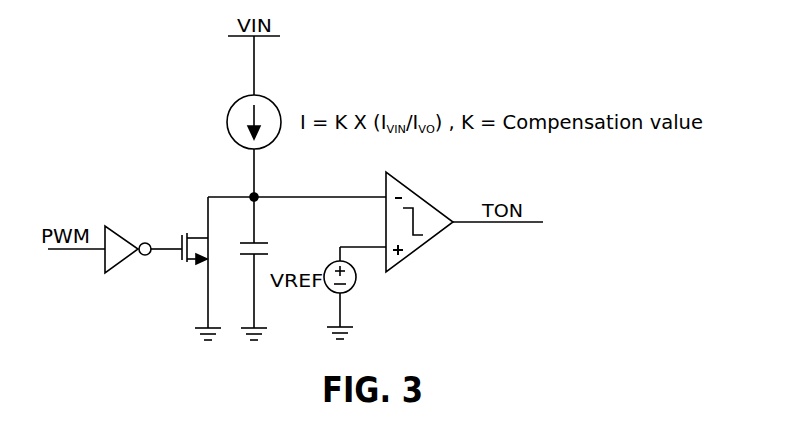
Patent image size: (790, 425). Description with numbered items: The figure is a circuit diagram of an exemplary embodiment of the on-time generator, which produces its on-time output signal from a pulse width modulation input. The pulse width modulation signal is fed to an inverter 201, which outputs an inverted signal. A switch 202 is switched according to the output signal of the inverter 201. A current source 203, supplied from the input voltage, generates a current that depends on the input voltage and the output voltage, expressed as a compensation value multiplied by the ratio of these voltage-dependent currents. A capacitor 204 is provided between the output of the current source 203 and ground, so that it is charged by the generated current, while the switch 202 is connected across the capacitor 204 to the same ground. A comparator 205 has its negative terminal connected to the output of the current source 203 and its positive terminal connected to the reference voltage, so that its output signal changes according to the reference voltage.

The inverter 201 is at (118, 226).
The switch 202 is at (185, 265).
The current source 203 is at (277, 101).
The capacitor 204 is at (258, 242).
The comparator 205 is at (412, 188).